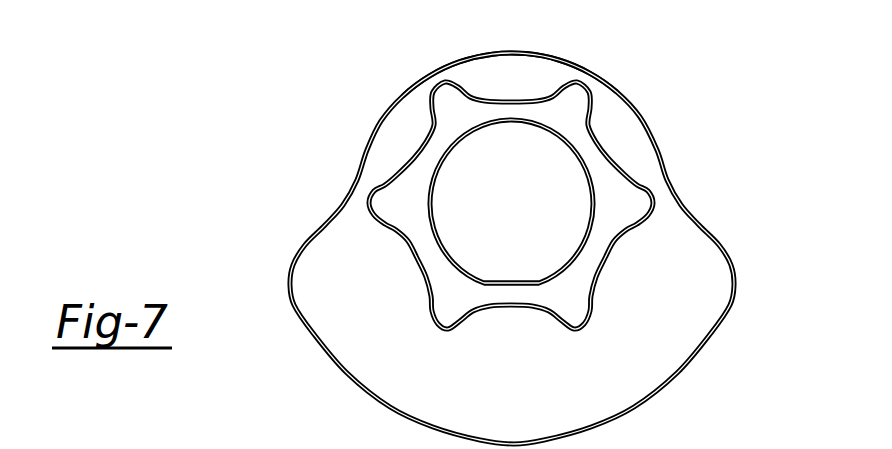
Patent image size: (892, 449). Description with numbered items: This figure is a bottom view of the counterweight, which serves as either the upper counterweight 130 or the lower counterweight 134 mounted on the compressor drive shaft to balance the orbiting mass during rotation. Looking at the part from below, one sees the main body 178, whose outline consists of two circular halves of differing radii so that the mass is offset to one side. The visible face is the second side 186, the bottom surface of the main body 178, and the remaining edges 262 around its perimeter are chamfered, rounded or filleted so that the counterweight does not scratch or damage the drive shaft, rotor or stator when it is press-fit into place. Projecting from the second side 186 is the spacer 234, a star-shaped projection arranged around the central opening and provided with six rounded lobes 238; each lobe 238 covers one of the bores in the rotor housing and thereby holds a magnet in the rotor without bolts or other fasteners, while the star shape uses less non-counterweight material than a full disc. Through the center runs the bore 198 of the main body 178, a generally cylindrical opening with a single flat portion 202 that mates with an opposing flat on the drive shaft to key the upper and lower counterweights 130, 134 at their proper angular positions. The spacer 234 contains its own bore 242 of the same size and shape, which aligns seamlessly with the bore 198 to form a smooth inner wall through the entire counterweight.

The upper counterweight 130 is at (494, 223).
The lower counterweight 134 is at (494, 223).
The main body 178 is at (494, 248).
The second side 186 is at (652, 353).
The edges 262 is at (507, 98).
The bore 242 is at (506, 226).
The lobes 238 is at (446, 99).
The spacer 234 is at (597, 160).
The flat portion 202 is at (512, 282).
The bore 198 is at (455, 236).